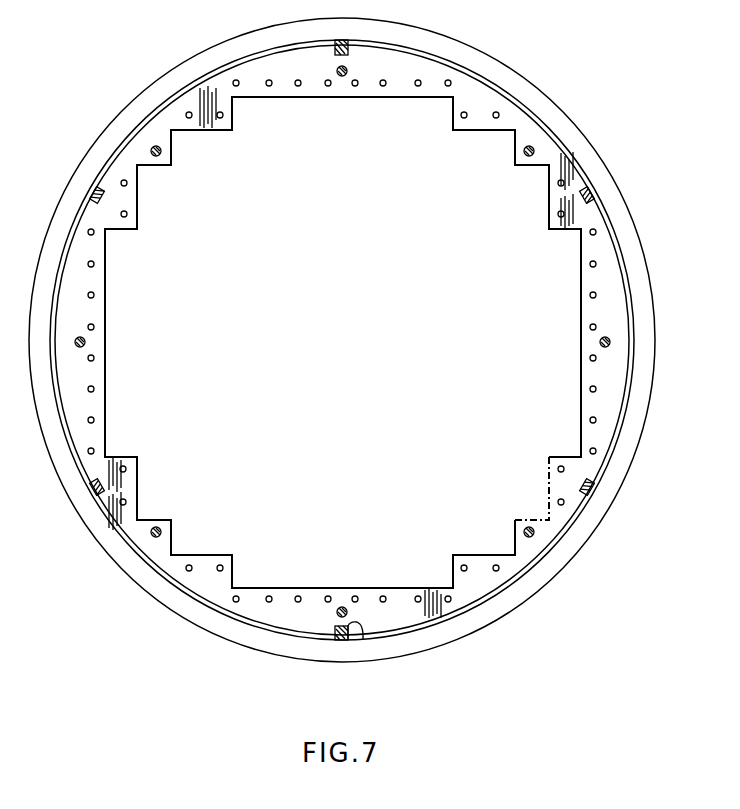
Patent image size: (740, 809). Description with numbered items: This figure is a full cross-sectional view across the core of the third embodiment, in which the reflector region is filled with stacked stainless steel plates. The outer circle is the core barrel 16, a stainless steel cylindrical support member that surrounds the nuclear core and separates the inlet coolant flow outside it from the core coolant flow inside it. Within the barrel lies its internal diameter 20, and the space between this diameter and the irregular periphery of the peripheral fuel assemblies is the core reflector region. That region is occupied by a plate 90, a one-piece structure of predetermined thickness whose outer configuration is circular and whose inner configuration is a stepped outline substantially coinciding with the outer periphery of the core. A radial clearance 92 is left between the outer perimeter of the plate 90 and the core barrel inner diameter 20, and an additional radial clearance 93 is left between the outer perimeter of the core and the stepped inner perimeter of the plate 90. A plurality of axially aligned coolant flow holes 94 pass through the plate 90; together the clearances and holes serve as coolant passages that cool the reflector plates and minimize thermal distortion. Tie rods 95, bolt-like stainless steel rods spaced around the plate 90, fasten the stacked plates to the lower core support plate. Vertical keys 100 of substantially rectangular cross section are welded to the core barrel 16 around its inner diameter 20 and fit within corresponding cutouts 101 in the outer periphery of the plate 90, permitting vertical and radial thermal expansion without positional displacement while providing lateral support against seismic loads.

The core barrel 16 is at (105, 128).
The internal diameter 20 is at (614, 446).
The plate 90 is at (488, 585).
The radial clearance 92 is at (580, 519).
The radial clearance 93 is at (550, 458).
The coolant flow holes 94 is at (466, 111).
The tie rods 95 is at (167, 528).
The vertical keys 100 is at (343, 634).
The cutouts 101 is at (362, 641).